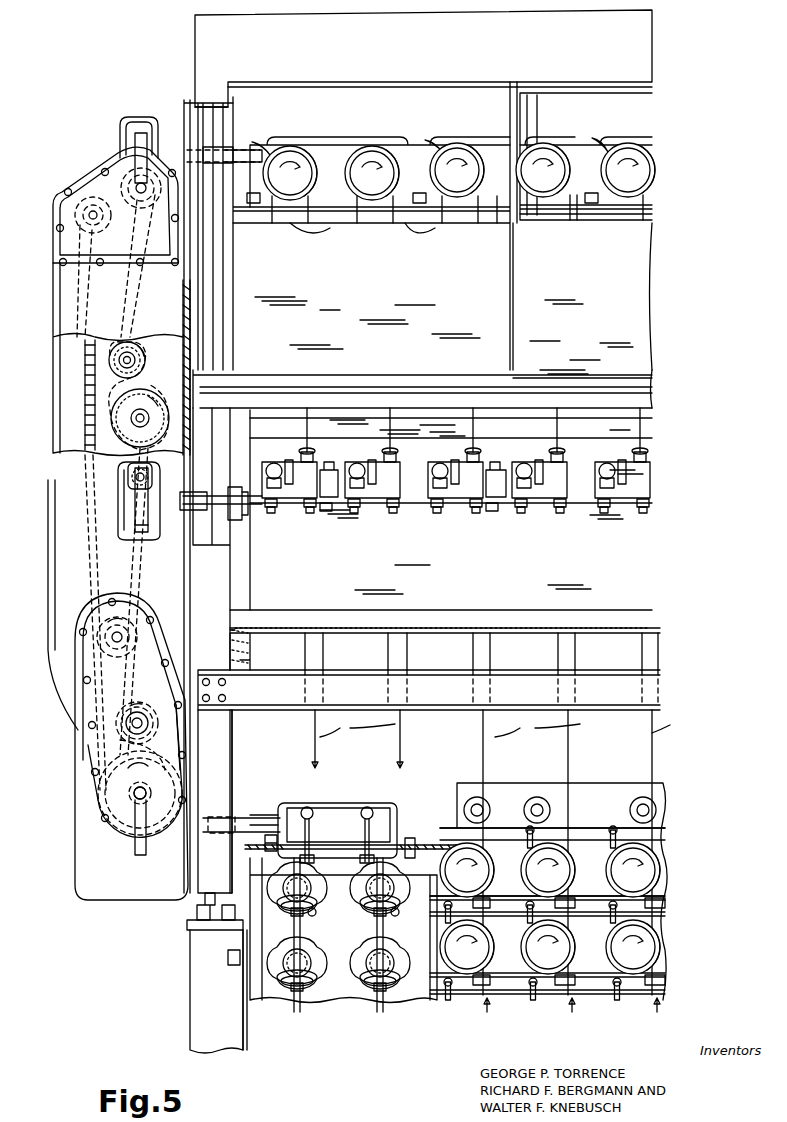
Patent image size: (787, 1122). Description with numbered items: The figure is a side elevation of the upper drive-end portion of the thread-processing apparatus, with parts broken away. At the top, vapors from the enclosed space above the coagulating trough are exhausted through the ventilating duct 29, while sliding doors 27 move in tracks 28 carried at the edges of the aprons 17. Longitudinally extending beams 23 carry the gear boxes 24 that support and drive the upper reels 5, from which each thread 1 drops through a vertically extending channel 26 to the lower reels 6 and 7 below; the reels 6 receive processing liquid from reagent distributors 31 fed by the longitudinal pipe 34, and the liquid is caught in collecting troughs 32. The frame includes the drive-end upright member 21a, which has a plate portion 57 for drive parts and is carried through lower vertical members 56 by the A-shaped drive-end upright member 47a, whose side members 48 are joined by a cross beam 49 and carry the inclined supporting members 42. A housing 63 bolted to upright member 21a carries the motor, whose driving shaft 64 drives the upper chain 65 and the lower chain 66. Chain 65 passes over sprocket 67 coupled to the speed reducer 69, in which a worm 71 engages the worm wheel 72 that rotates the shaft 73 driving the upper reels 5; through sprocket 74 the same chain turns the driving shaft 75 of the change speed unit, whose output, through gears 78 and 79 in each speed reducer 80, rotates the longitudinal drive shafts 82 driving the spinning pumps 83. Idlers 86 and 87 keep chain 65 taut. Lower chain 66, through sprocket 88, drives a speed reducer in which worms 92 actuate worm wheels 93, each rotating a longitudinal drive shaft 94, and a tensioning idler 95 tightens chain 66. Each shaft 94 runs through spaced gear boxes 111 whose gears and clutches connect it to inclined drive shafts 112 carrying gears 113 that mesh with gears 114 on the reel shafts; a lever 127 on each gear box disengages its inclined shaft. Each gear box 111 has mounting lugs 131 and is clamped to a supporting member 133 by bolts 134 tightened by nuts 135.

The thread 1 is at (690, 1000).
The thread store device 5 is at (459, 171).
The first liquid processing reel 6 is at (550, 870).
The thread store device 7 is at (550, 947).
The apron 17 is at (578, 380).
The drive-end upright frame member 21a is at (237, 734).
The longitudinally extending beam 23 is at (585, 222).
The gear box 24 is at (340, 137).
The vertically extending channel 26 is at (387, 655).
The sliding door 27 is at (330, 312).
The track 28 is at (368, 378).
The ventilating duct 29 is at (444, 59).
The reagent distributor 31 is at (612, 835).
The collecting trough 32 is at (508, 878).
The pipe 34 is at (510, 830).
The inclined supporting member 42 is at (342, 1000).
The drive-end upright member 47a is at (252, 1039).
The side member 48 is at (190, 1000).
The cross beam 49 is at (190, 954).
The lower vertical member 56 is at (230, 592).
The plate portion 57 is at (185, 303).
The housing 63 is at (53, 357).
The driving shaft 64 is at (112, 632).
The upper chain 65 is at (70, 418).
The lower chain 66 is at (125, 690).
The sprocket 67 is at (141, 200).
The speed reducer 69 is at (120, 135).
The worm 71 is at (136, 184).
The worm wheel 72 is at (140, 142).
The shaft 73 is at (247, 137).
The sprocket 74 is at (128, 395).
The driving shaft 75 is at (134, 424).
The gear 78 is at (128, 475).
The gear 79 is at (140, 533).
The speed reducer 80 is at (118, 516).
The drive shaft 82 is at (222, 498).
The spinning pump 83 is at (368, 500).
The idler 86 is at (95, 224).
The idler 87 is at (146, 361).
The sprocket 88 is at (133, 762).
The worm 92 is at (137, 797).
The worm wheel 93 is at (140, 855).
The drive shaft 94 is at (258, 818).
The tensioning idler 95 is at (152, 724).
The gear box 111 is at (342, 803).
The inclined drive shaft 112 is at (390, 916).
The gear 113 is at (294, 912).
The gear 114 is at (362, 900).
The lever 127 is at (308, 807).
The mounting lug 131 is at (437, 843).
The supporting member 133 is at (260, 850).
The bolt 134 is at (265, 838).
The nut 135 is at (415, 850).